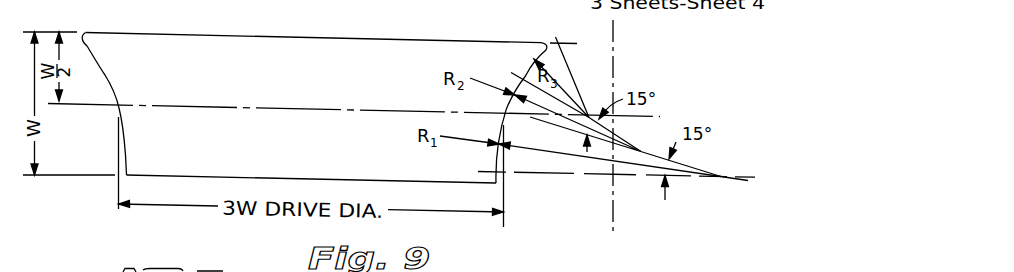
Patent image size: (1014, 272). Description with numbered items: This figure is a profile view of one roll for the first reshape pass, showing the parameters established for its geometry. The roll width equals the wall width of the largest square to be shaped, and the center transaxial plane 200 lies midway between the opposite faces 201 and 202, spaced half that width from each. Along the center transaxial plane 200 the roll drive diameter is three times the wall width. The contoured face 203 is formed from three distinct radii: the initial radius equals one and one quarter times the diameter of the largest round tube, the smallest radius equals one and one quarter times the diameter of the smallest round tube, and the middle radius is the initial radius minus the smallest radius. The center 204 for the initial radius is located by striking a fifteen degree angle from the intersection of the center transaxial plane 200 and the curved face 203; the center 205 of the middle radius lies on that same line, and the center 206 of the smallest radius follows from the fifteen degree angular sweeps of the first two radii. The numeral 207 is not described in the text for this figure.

The center transaxial plane 200 is at (180, 106).
The roll face 201 is at (281, 33).
The roll face 202 is at (143, 178).
The contoured face 203 is at (114, 92).
The center for R1 204 is at (723, 175).
The center of R2 205 is at (654, 141).
The center of R3 206 is at (591, 114).
The drive element (adjacent figure) 207 is at (630, 265).